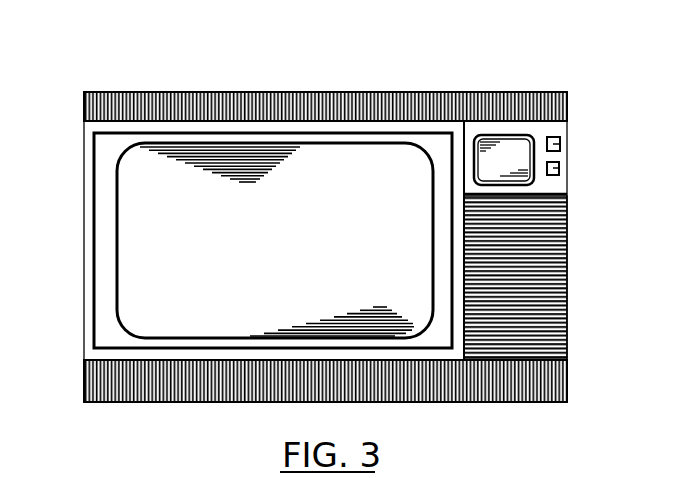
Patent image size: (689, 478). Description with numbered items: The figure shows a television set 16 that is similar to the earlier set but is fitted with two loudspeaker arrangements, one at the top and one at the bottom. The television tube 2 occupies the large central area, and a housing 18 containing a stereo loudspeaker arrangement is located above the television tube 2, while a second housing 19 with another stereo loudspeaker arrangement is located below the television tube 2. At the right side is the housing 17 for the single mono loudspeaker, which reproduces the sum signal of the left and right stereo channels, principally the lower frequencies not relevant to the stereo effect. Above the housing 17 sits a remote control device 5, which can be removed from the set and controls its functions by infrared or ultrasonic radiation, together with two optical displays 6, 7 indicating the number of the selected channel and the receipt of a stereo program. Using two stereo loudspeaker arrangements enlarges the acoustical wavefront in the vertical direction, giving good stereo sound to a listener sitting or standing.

The television set 16 is at (516, 71).
The housing 18 is at (567, 107).
The housing 19 is at (555, 381).
The television tube 2 is at (128, 245).
The remote control device 5 is at (520, 180).
The optical display 6 is at (560, 143).
The optical display 7 is at (559, 168).
The housing 17 is at (568, 280).